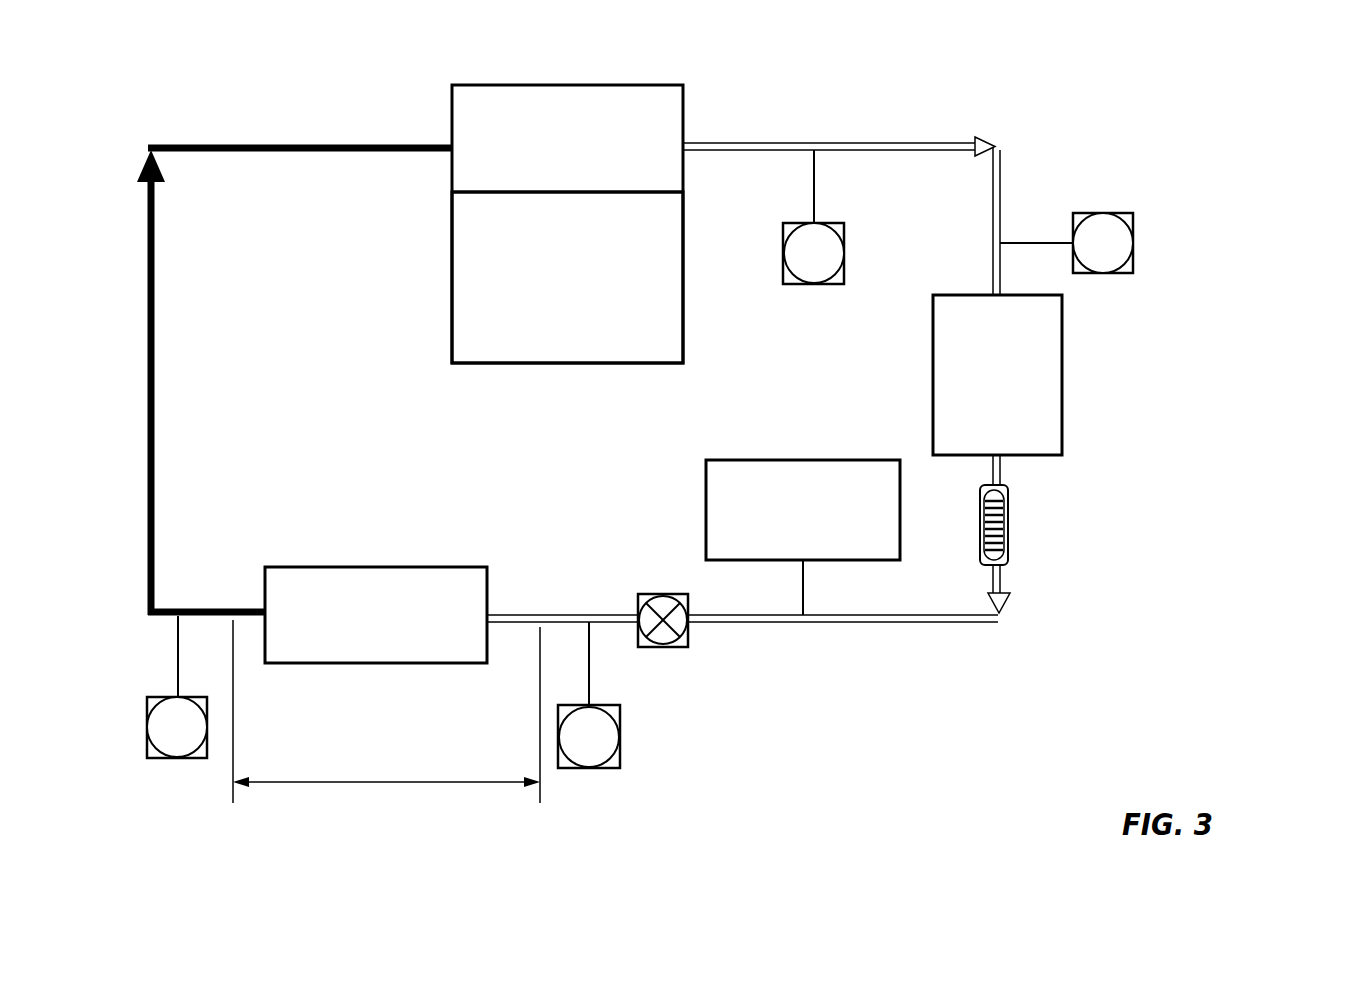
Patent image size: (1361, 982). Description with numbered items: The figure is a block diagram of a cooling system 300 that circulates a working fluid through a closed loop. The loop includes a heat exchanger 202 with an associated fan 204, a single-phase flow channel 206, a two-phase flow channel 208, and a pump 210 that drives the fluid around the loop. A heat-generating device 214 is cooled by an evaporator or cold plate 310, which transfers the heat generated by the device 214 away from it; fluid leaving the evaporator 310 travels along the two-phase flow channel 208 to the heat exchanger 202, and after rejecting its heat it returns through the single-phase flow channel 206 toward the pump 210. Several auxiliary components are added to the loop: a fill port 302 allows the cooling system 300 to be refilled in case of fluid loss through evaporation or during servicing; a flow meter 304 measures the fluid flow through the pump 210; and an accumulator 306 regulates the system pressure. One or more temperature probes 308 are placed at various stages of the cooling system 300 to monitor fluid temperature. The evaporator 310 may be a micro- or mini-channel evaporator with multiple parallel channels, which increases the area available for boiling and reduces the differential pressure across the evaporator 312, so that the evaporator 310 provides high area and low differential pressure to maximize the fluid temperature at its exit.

The cooling system 300 is at (1276, 88).
The heat exchanger 202 is at (685, 100).
The fan 204 is at (450, 328).
The single-phase flow channel 206 is at (888, 140).
The two-phase flow channel 208 is at (147, 403).
The pump 210 is at (1063, 375).
The heat-generating device 214 is at (690, 638).
The fill port 302 is at (1136, 230).
The flow meter 304 is at (1010, 519).
The accumulator 306 is at (869, 458).
The temperature probe 308 is at (825, 286).
The evaporator or cold plate 310 is at (489, 572).
The differential pressure across the evaporator 312 is at (500, 786).